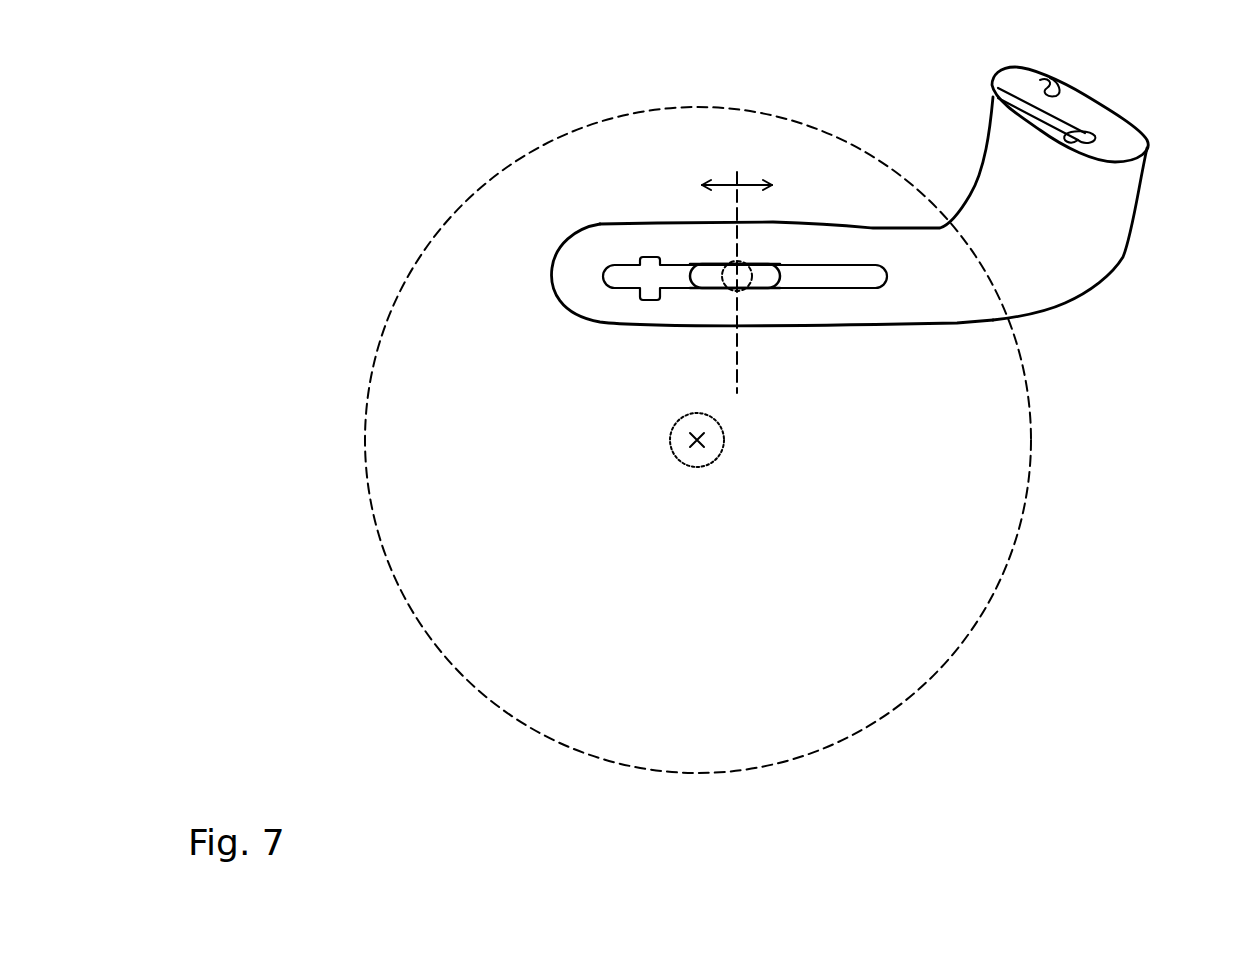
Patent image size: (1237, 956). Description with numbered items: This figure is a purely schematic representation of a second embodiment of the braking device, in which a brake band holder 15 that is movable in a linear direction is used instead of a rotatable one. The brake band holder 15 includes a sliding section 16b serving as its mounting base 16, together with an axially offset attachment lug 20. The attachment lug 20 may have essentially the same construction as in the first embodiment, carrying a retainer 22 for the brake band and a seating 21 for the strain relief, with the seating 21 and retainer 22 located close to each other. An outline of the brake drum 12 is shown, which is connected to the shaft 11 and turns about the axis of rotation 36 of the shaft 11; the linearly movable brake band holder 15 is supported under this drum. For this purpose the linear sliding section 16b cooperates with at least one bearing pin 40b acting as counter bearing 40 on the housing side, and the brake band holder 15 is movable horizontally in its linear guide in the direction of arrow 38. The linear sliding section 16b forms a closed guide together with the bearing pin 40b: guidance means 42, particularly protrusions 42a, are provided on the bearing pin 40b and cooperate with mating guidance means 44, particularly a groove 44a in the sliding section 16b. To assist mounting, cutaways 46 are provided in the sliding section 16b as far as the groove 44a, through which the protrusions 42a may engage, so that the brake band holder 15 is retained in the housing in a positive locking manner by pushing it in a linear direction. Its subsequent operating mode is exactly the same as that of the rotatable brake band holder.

The shaft 11 is at (720, 423).
The brake drum 12 is at (555, 142).
The brake band holder 15 is at (792, 260).
The mounting base 16 is at (676, 211).
The sliding section 16b is at (578, 280).
The attachment lug 20 is at (1073, 208).
The seating 21 is at (1003, 71).
The retainer 22 is at (1092, 128).
The axis of rotation 36 is at (700, 447).
The arrow 38 is at (720, 183).
The counter bearing 40 is at (931, 383).
The bearing pin 40b is at (762, 281).
The guidance means 42 is at (798, 173).
The protrusions 42a is at (750, 258).
The mating guidance means 44 is at (816, 193).
The groove 44a is at (838, 268).
The cutaways 46 is at (650, 257).